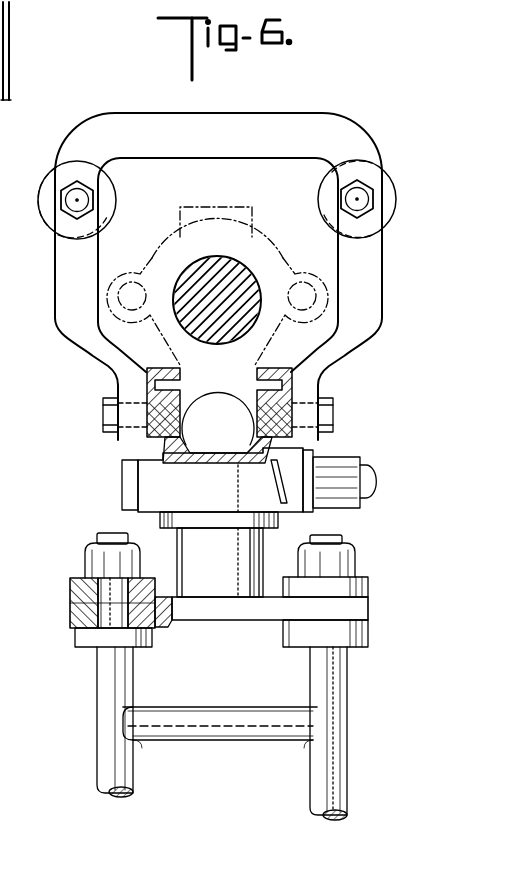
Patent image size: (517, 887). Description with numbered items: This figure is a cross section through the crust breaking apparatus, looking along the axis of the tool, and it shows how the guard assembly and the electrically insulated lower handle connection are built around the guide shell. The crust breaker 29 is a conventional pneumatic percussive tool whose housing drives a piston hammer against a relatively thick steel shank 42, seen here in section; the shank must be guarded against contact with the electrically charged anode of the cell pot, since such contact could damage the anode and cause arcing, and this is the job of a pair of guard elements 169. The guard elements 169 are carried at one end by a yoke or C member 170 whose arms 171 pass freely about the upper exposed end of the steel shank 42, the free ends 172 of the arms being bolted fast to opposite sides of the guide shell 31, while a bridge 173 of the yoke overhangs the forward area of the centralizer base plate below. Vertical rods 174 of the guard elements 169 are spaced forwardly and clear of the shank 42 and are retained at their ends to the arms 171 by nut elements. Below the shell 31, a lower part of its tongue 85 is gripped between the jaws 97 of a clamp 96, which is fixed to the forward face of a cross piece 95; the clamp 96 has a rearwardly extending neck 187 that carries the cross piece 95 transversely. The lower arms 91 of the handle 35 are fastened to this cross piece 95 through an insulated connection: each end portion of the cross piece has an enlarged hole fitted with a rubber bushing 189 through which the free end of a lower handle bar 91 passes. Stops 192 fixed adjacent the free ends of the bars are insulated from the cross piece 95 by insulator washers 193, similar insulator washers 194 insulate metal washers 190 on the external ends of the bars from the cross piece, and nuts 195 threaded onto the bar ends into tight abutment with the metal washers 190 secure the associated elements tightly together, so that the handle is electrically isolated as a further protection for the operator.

The crust breaker 29 is at (276, 218).
The shell 31 is at (300, 372).
The handle 35 is at (351, 816).
The steel shank 42 is at (226, 252).
The tongue 85 is at (185, 446).
The lower arms 91 is at (118, 772).
The cross piece 95 is at (262, 626).
The clamp 96 is at (315, 452).
The jaws 97 is at (247, 450).
The guard elements 169 is at (49, 167).
The yoke 170 is at (92, 129).
The arms 171 is at (54, 283).
The free ends 172 is at (118, 385).
The bridge 173 is at (238, 112).
The vertical rods 174 is at (85, 200).
The neck 187 is at (226, 567).
The rubber bushing 189 is at (72, 613).
The metal washers 190 is at (142, 578).
The stops 192 is at (147, 648).
The insulator washers 193 is at (158, 626).
The insulator washers 194 is at (72, 591).
The nuts 195 is at (88, 556).